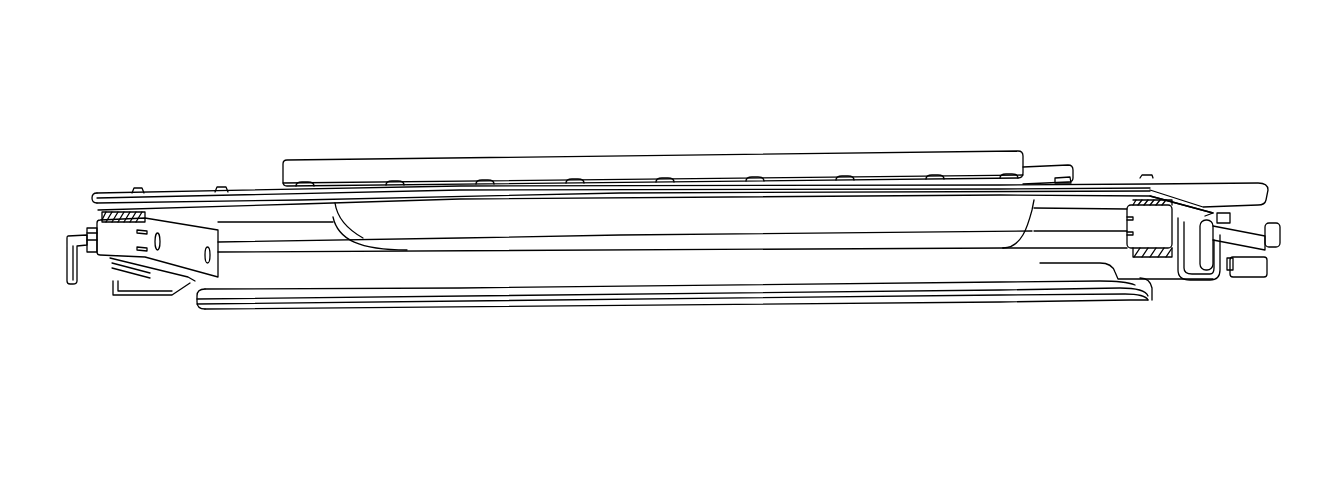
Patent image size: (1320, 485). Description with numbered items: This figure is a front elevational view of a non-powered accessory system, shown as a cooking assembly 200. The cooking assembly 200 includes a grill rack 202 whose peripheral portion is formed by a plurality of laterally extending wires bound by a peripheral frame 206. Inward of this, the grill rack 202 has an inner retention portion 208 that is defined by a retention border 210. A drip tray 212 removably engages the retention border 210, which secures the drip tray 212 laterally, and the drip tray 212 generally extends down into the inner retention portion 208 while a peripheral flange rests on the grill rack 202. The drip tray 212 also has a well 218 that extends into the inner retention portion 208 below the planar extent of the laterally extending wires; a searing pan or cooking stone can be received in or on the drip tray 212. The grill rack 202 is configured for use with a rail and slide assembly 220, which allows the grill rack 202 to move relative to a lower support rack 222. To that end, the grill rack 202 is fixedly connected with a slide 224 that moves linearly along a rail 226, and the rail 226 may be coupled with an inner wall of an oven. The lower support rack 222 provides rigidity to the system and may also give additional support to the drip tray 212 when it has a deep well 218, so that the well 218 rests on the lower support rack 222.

The cooking assembly 200 is at (252, 122).
The grill rack 202 is at (1098, 183).
The peripheral frame 206 is at (180, 200).
The inner retention portion 208 is at (335, 205).
The retention border 210 is at (1034, 200).
The drip tray 212 is at (480, 238).
The well 218 is at (877, 213).
The rail and slide assembly 220 is at (178, 248).
The lower support rack 222 is at (702, 300).
The slide 224 is at (118, 242).
The rail 226 is at (118, 215).